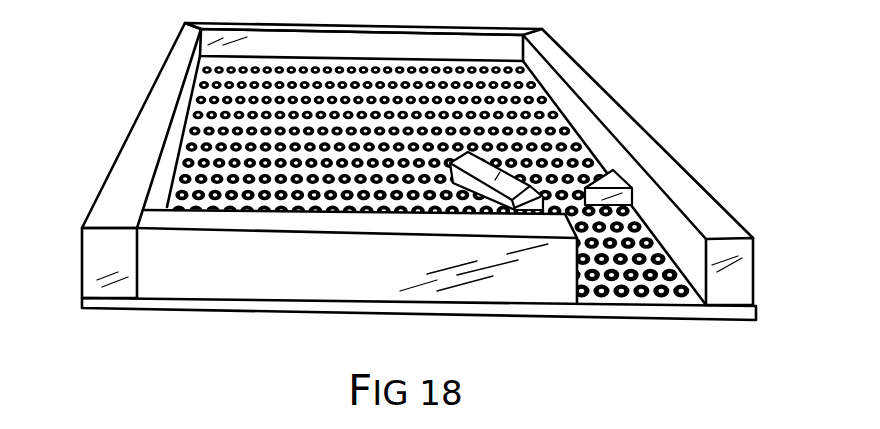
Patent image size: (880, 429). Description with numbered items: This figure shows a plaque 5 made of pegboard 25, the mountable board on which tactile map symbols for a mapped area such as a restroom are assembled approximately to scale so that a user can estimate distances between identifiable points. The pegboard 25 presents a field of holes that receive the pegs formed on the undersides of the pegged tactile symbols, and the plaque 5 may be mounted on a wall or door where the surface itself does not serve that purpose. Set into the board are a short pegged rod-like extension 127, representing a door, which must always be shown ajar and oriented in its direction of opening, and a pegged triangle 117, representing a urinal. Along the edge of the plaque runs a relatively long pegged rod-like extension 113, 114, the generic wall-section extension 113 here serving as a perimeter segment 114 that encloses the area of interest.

The plaque 5 is at (185, 63).
The pegboard 25 is at (363, 177).
The pegged rod-like extension representing a door 127 is at (513, 157).
The pegged triangle representing a urinal 117 is at (615, 173).
The pegged rod-like extension 113 is at (402, 297).
The pegged perimeter segment 114 is at (320, 286).